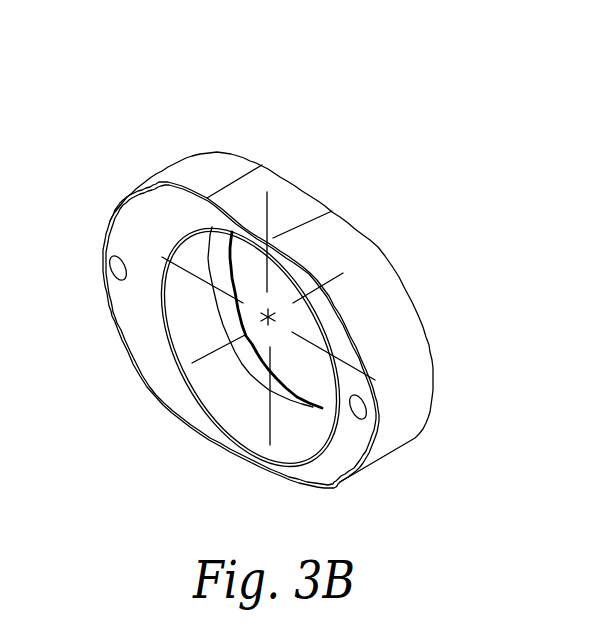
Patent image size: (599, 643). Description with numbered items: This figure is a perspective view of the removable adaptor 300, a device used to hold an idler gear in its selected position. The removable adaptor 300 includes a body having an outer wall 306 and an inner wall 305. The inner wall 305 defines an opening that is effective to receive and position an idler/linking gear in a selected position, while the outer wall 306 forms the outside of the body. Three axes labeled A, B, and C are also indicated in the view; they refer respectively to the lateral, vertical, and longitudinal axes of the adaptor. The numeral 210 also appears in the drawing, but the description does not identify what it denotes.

The lens element 210 is at (255, 237).
The removable adaptor 300 is at (435, 218).
The inner wall 305 is at (185, 340).
The outer wall 306 is at (397, 353).